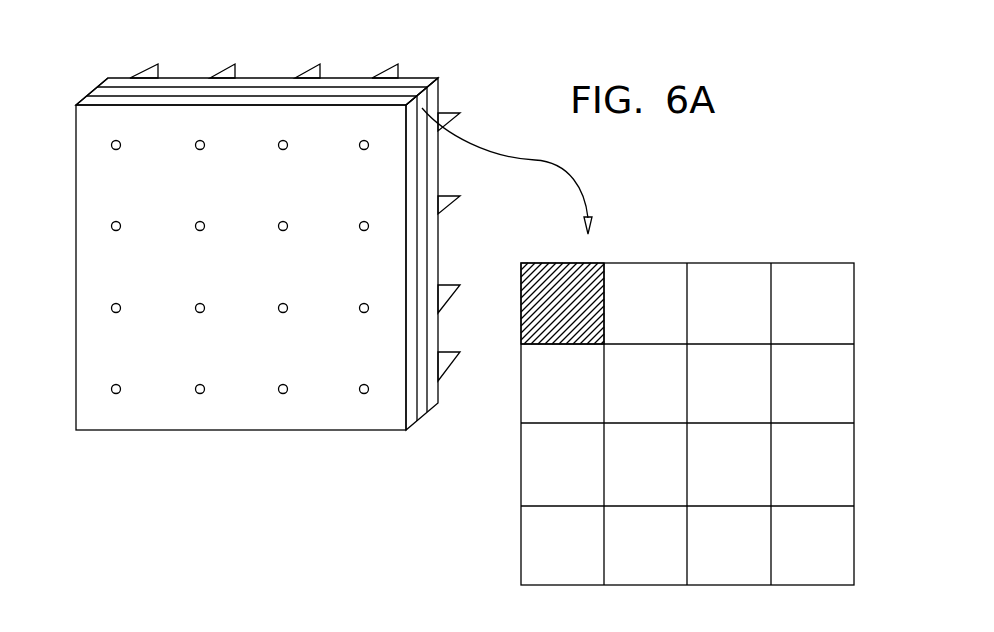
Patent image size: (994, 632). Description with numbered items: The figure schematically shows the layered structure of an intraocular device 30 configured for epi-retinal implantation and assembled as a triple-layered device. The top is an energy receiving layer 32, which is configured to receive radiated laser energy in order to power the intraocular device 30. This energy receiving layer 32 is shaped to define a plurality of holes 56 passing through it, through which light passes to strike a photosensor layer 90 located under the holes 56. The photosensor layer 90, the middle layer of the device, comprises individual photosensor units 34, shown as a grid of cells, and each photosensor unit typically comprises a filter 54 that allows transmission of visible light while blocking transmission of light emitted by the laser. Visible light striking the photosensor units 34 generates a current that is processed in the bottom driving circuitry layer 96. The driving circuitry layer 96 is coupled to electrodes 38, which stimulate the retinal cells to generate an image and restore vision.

The intraocular device 30 is at (262, 296).
The energy receiving layer 32 is at (255, 420).
The photosensor units 34 is at (549, 263).
The electrodes 38 is at (155, 64).
The filter 54 is at (552, 307).
The holes 56 is at (111, 390).
The photosensor layer 90 is at (102, 83).
The driving circuitry layer 96 is at (424, 77).